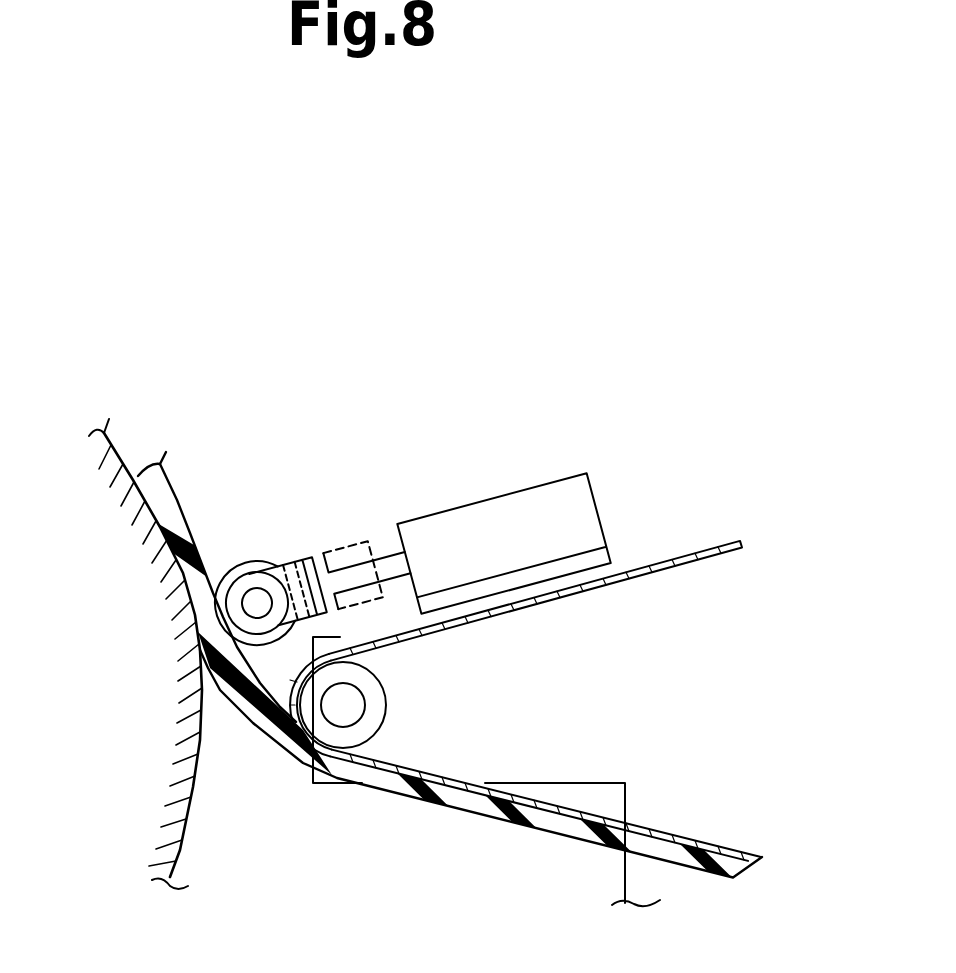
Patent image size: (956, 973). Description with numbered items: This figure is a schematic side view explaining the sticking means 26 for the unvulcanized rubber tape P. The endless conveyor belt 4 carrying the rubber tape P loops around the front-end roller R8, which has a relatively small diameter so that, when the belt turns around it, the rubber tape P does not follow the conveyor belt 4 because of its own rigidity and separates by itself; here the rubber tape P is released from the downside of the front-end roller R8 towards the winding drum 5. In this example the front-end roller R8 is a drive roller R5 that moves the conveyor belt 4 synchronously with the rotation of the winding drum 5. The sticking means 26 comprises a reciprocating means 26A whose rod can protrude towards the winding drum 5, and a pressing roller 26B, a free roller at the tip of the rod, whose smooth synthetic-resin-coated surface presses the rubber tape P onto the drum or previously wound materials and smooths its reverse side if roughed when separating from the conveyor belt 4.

The sticking means 26 is at (439, 474).
The reciprocating means 26A is at (493, 513).
The pressing roller 26B is at (243, 575).
The front-end roller R8 is at (475, 705).
The drive roller R5 is at (375, 703).
The conveyor belt 4 is at (775, 874).
The unvulcanized rubber tape P is at (572, 825).
The winding drum 5 is at (180, 850).